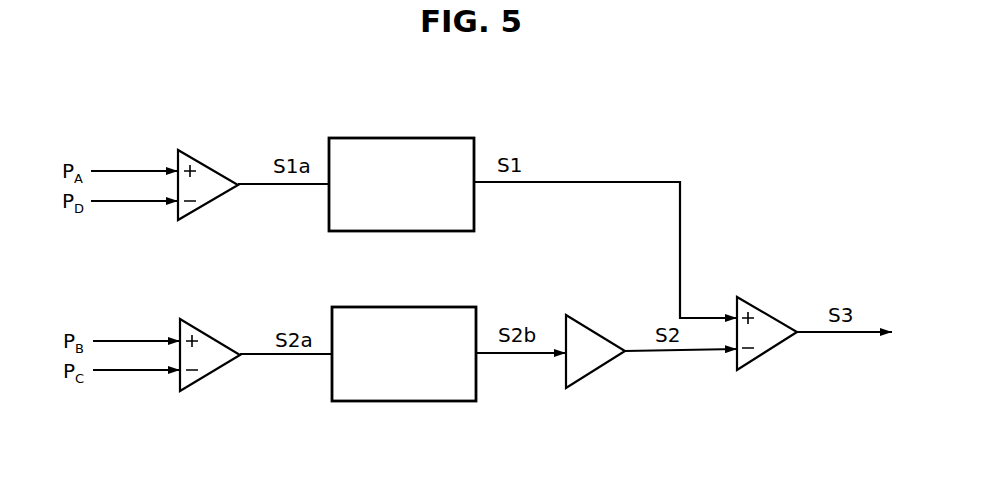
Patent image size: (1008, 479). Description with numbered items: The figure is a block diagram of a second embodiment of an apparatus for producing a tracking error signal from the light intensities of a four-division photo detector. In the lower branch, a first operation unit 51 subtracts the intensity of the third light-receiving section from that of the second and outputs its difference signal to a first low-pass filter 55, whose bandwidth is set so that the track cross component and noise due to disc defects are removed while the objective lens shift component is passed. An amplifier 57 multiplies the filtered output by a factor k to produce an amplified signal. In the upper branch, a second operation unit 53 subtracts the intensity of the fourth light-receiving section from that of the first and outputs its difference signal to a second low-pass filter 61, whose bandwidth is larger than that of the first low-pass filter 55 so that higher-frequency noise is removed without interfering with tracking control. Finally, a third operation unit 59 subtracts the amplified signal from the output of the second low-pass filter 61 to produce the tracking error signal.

The second operation unit 53 is at (208, 166).
The second low-pass filter 61 is at (403, 133).
The first operation unit 51 is at (210, 335).
The first low-pass filter 55 is at (405, 303).
The amplifier 57 is at (598, 330).
The third operation unit 59 is at (770, 312).